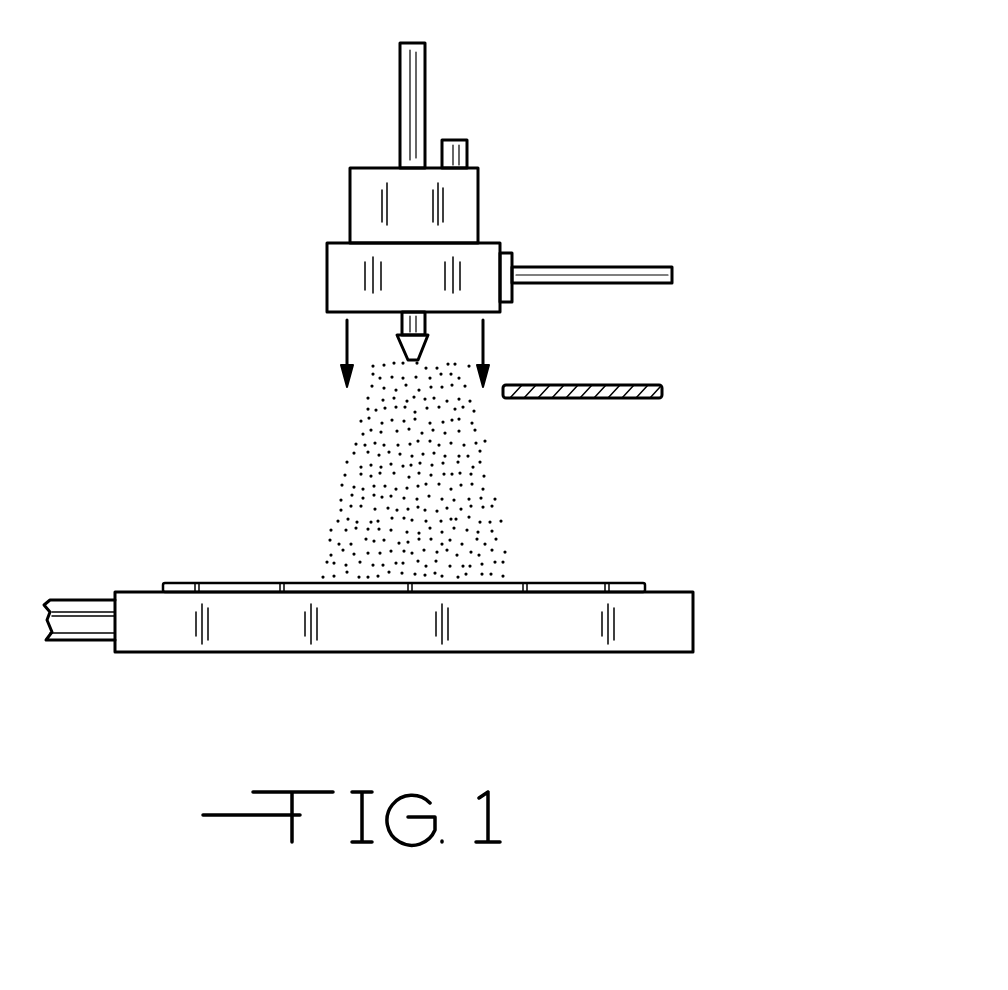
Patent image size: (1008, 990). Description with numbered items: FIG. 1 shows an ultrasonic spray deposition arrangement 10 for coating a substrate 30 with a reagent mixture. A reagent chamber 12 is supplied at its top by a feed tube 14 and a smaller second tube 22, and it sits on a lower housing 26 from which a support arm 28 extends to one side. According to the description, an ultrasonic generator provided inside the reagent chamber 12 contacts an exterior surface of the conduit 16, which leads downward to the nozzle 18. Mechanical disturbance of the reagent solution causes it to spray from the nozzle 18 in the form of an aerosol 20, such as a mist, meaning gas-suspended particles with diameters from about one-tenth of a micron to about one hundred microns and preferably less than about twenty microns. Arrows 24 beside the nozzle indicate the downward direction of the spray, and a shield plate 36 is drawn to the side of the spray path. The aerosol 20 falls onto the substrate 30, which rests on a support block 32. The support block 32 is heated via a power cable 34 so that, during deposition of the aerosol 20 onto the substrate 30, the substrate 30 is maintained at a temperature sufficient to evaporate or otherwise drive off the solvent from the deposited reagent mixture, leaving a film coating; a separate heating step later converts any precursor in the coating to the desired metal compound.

The spray coating apparatus 10 is at (772, 168).
The reagent chamber 12 is at (463, 210).
The feed tube 14 is at (425, 77).
The conduit 16 is at (398, 340).
The nozzle 18 is at (425, 345).
The aerosol 20 is at (500, 477).
The secondary inlet tube 22 is at (467, 150).
The spray direction arrows 24 is at (345, 341).
The lower housing 26 is at (343, 278).
The support arm 28 is at (590, 268).
The substrate 30 is at (593, 583).
The support block 32 is at (677, 615).
The power cable 34 is at (77, 603).
The shield plate 36 is at (640, 387).